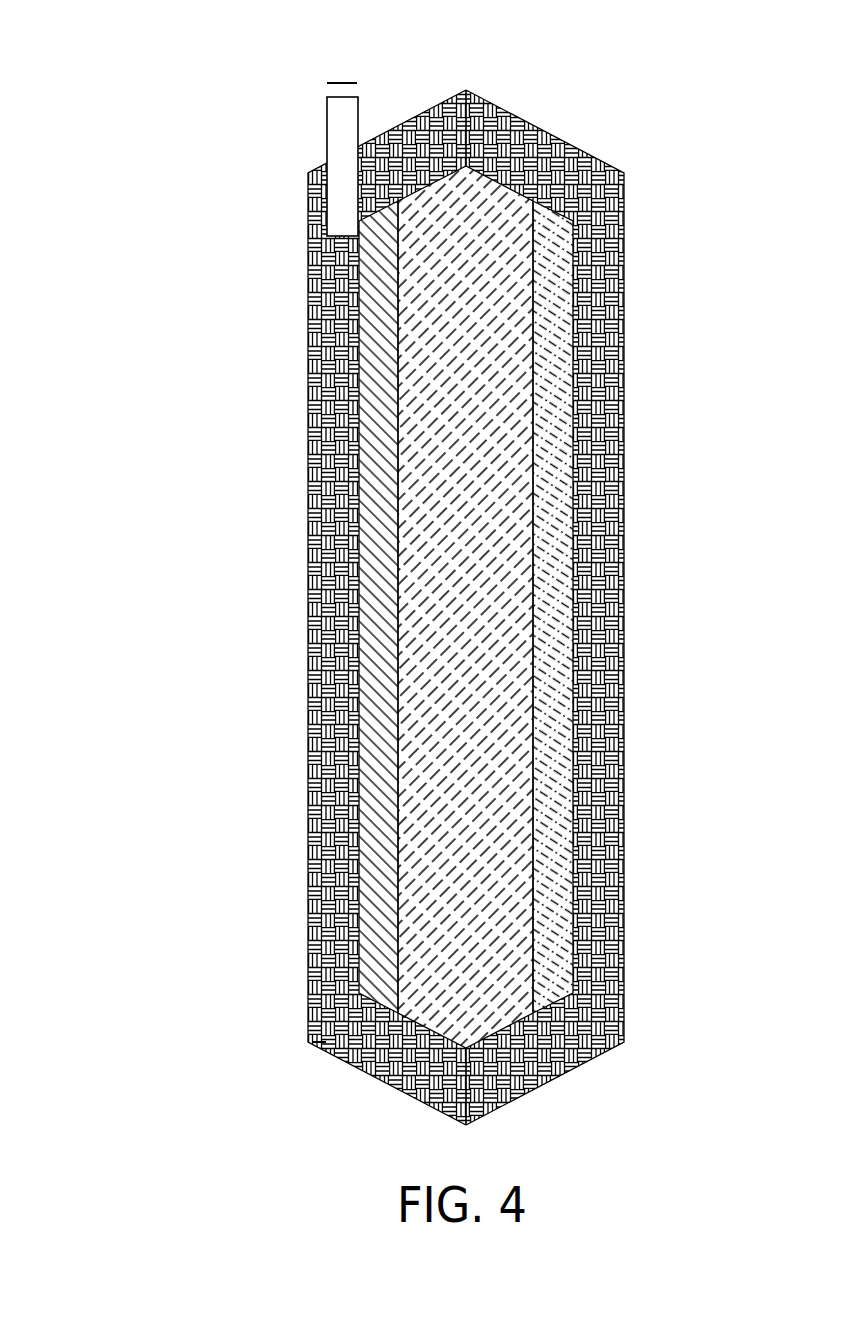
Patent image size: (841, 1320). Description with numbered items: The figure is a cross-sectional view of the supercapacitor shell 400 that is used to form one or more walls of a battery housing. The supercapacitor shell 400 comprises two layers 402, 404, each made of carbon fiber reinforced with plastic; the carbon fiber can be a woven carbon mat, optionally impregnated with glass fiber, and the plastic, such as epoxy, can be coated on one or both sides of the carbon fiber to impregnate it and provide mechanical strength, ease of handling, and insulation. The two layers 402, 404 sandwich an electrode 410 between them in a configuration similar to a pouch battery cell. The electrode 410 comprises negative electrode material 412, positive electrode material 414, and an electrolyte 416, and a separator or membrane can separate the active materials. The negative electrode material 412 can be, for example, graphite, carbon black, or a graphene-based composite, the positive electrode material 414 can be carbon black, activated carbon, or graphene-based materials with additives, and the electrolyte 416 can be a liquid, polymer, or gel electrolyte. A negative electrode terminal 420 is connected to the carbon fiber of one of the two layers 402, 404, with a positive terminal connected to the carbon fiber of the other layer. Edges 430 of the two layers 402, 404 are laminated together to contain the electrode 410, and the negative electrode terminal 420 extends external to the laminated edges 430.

The supercapacitor shell 400 is at (122, 52).
The layer of carbon fiber reinforced with plastic 402 is at (323, 428).
The layer of carbon fiber reinforced with plastic 404 is at (608, 478).
The electrode 410 is at (519, 214).
The negative electrode material 412 is at (377, 345).
The positive electrode material 414 is at (562, 283).
The electrolyte 416 is at (497, 372).
The negative electrode terminal 420 is at (336, 137).
The edges 430 is at (463, 152).